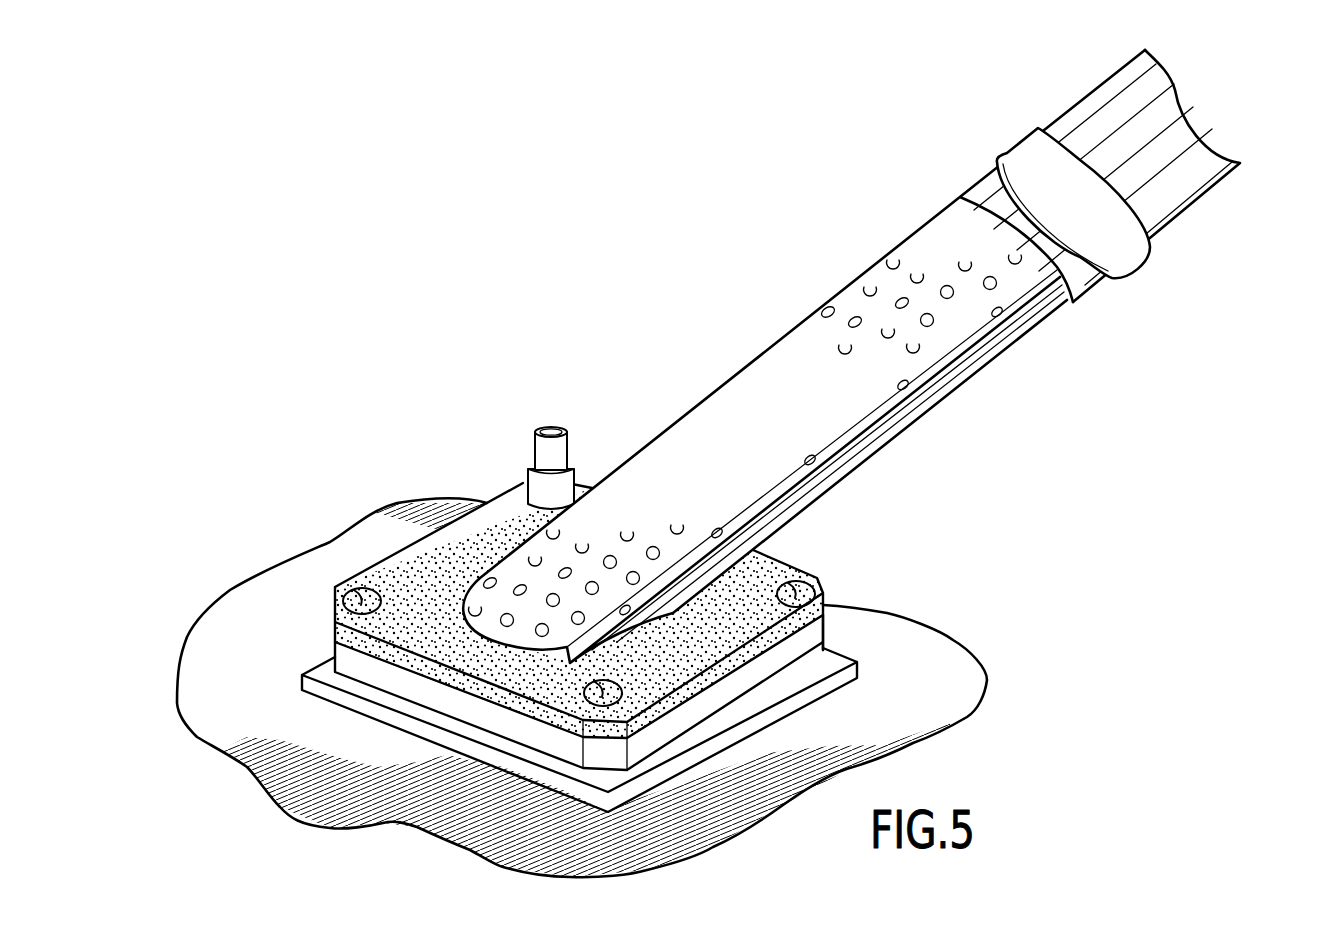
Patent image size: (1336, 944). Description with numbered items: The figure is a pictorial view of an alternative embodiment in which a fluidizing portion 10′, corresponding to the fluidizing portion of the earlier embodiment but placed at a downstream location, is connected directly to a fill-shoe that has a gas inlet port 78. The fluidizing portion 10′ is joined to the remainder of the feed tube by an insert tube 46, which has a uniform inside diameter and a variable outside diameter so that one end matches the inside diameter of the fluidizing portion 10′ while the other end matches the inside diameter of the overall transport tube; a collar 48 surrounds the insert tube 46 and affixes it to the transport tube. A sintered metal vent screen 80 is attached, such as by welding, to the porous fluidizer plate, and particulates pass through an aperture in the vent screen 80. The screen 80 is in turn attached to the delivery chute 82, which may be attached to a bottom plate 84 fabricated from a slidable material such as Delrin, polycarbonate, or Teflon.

The fluidizing portion 10′ is at (783, 360).
The insert tube 46 is at (1205, 168).
The collar 48 is at (1033, 148).
The gas inlet port 78 is at (542, 458).
The sintered metal vent screen 80 is at (412, 572).
The delivery chute 82 is at (333, 650).
The bottom plate 84 is at (600, 798).